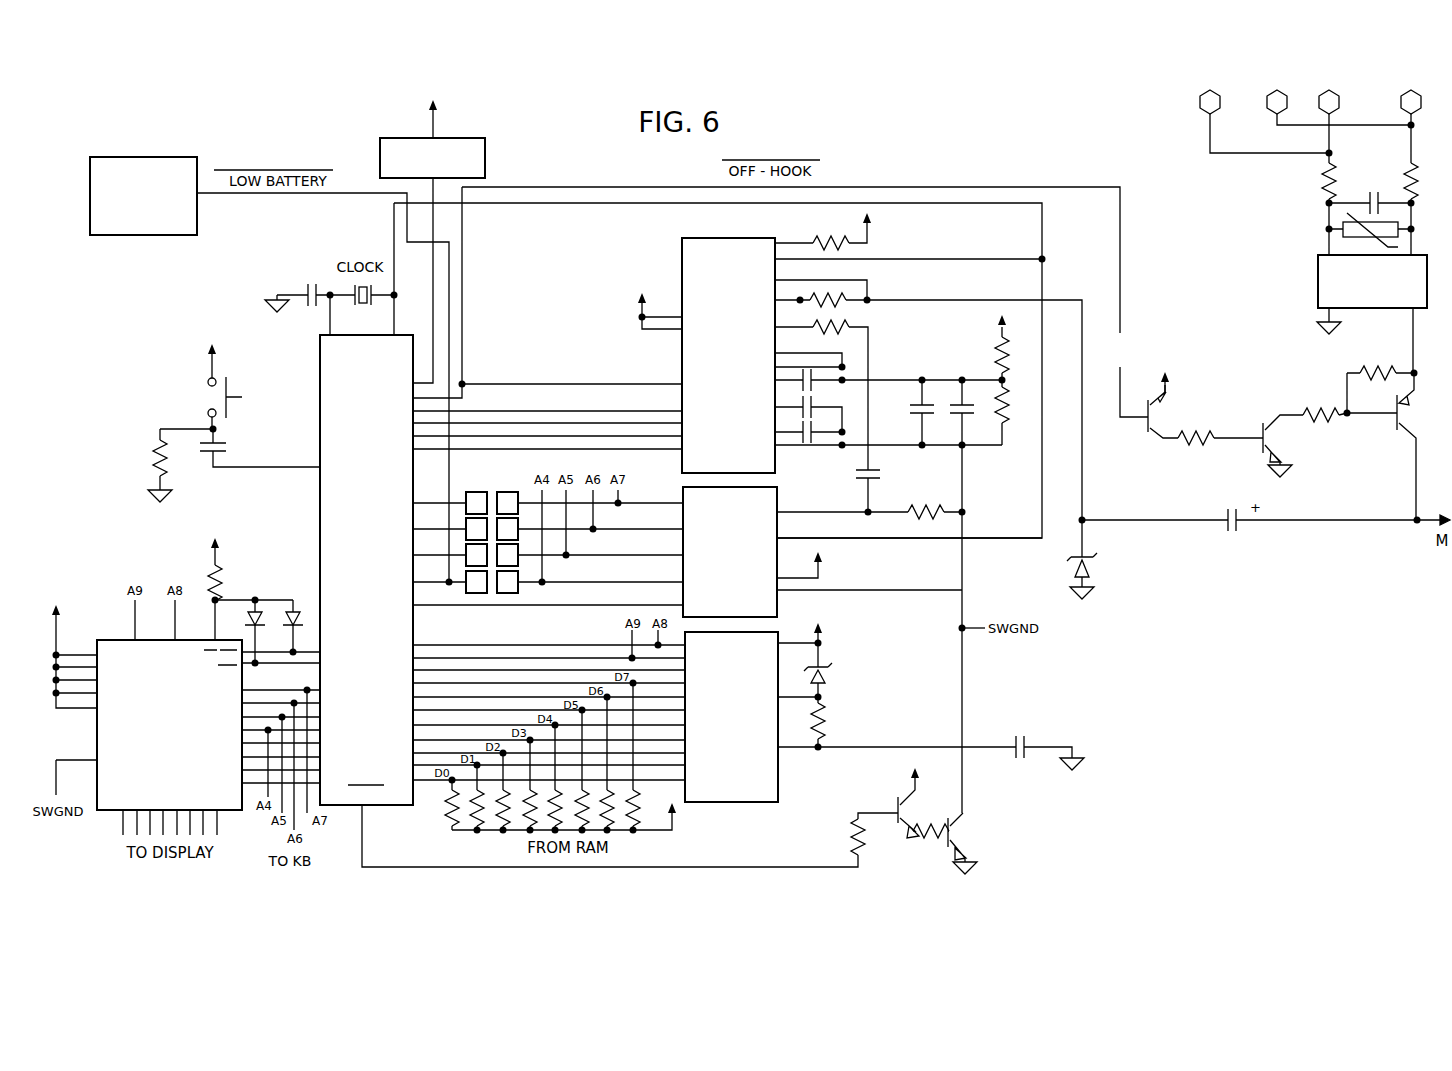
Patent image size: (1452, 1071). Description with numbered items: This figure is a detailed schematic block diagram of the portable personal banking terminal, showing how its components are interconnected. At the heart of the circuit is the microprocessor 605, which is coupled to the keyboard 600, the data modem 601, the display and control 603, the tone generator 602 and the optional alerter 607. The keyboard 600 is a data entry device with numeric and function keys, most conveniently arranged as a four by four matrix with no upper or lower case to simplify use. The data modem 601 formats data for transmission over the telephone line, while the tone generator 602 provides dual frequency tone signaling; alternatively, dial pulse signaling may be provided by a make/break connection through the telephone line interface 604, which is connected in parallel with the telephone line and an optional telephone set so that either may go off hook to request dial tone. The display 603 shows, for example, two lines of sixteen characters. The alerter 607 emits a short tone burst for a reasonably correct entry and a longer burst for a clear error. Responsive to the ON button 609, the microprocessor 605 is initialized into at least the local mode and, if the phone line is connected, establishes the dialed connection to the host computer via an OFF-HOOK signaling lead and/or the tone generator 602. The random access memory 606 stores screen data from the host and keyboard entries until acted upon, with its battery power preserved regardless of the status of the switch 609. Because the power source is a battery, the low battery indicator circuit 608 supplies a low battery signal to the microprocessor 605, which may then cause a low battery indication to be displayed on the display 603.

The keyboard 600 is at (472, 476).
The data modem 601 is at (682, 286).
The tone generator 602 is at (693, 496).
The display and control 603 is at (778, 636).
The telephone line interface 604 is at (1418, 369).
The microprocessor 605 is at (320, 546).
The random access memory 606 is at (100, 798).
The alerter 607 is at (421, 138).
The low battery indicator circuit 608 is at (174, 157).
The ON button 609 is at (212, 395).